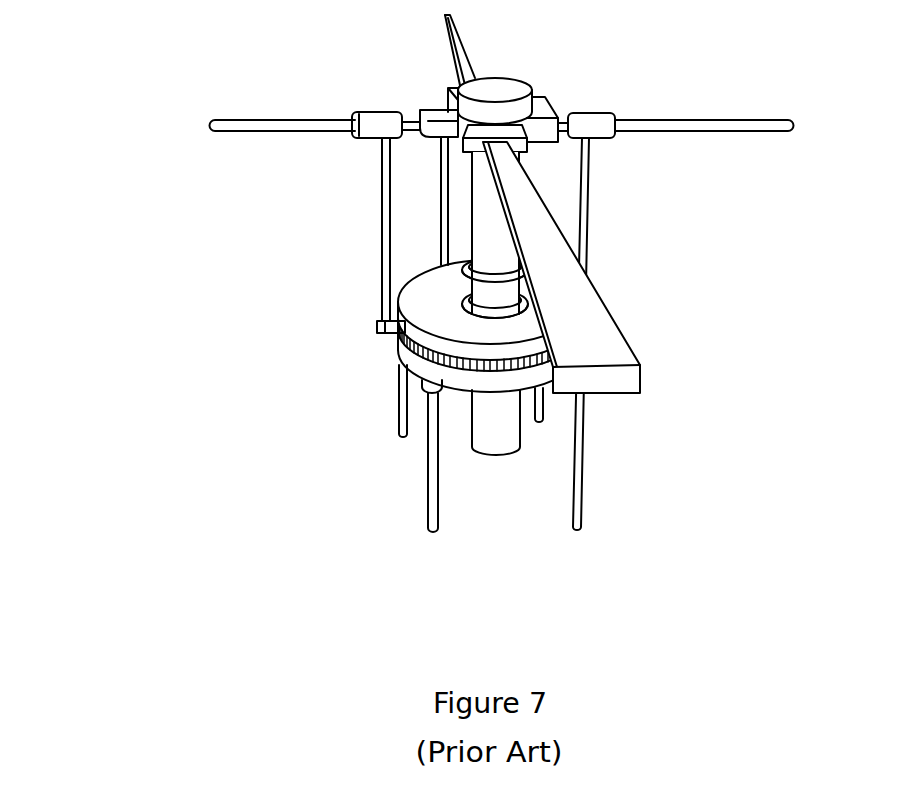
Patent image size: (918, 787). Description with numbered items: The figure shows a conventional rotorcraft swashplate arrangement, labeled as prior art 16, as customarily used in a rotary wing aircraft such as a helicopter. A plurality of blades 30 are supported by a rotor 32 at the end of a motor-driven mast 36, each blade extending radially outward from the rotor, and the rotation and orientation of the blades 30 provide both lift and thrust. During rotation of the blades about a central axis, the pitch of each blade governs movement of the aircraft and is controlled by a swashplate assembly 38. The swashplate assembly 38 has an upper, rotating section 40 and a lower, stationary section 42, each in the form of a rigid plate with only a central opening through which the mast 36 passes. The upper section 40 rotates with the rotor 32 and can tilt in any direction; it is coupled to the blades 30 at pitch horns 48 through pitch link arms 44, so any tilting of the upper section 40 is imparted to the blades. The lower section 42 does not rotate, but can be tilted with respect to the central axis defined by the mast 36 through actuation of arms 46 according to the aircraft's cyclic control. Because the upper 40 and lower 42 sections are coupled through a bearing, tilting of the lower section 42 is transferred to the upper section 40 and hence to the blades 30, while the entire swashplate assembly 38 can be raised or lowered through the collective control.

The prior art antenna positioner 16 is at (410, 275).
The blades 30 is at (686, 126).
The rotor 32 is at (546, 95).
The motor-driven mast 36 is at (498, 457).
The swashplate assembly 38 is at (383, 337).
The upper, rotating section 40 is at (375, 325).
The lower, stationary section 42 is at (396, 348).
The pitch link arms 44 is at (591, 222).
The arms 46 is at (431, 494).
The pitch horns 48 is at (350, 142).